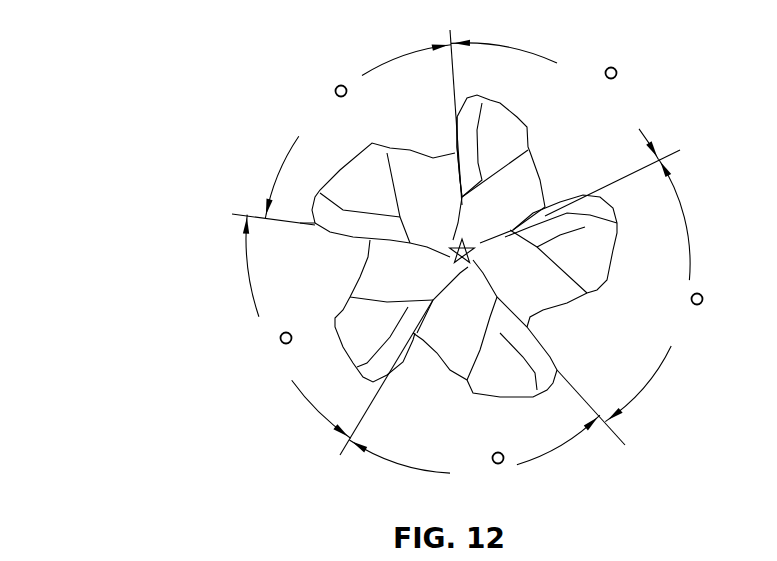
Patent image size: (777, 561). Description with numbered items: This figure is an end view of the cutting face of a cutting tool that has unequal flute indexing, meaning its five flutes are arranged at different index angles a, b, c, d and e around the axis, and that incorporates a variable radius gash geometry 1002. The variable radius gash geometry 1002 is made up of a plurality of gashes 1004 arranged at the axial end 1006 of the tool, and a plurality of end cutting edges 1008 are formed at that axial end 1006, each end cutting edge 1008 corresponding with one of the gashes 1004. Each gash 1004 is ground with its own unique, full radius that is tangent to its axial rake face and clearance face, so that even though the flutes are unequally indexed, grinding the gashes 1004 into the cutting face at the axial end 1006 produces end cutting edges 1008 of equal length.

The variable radius gash geometry 1002 is at (151, 179).
The gashes 1004 is at (527, 199).
The axial end 1006 is at (203, 124).
The end cutting edges 1008 is at (459, 153).